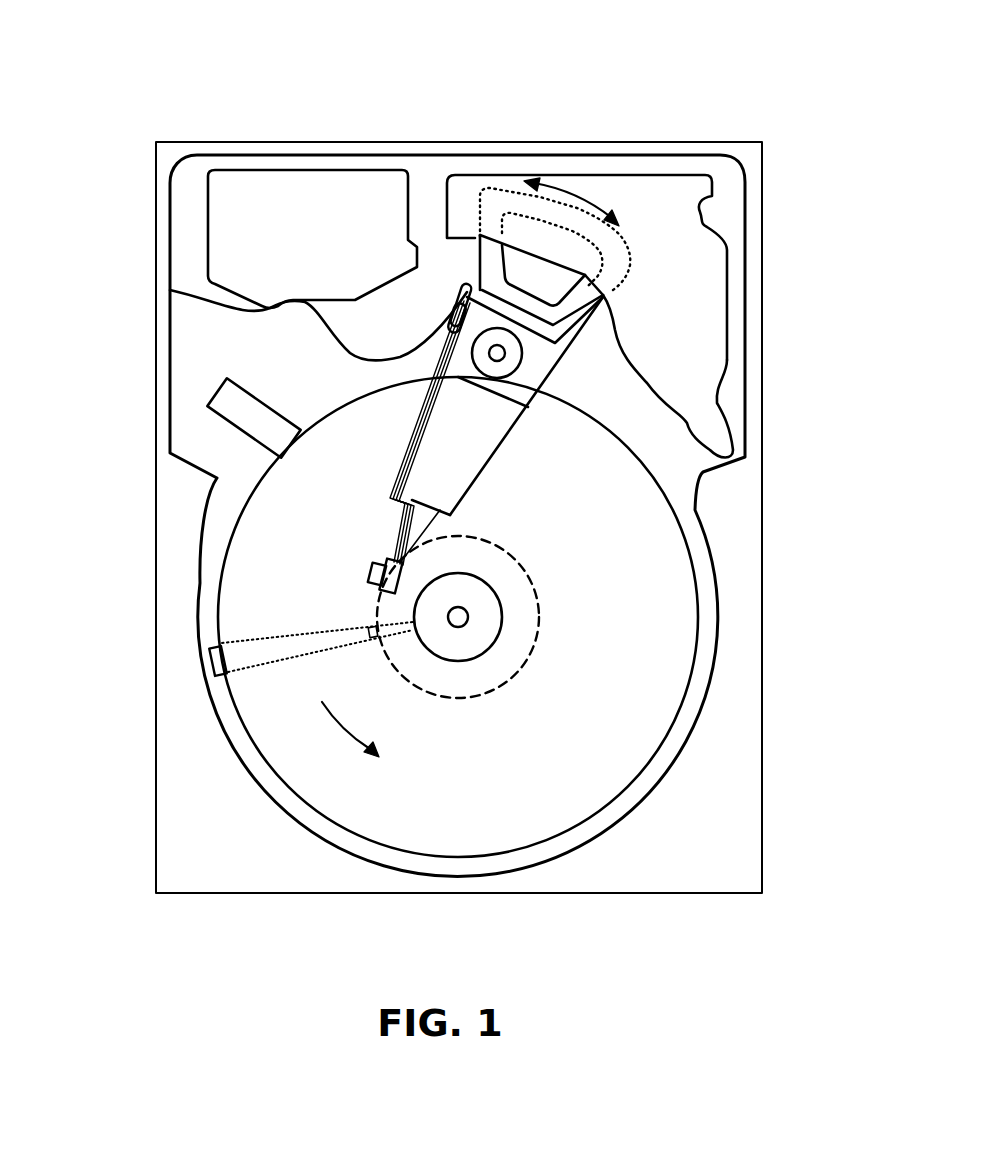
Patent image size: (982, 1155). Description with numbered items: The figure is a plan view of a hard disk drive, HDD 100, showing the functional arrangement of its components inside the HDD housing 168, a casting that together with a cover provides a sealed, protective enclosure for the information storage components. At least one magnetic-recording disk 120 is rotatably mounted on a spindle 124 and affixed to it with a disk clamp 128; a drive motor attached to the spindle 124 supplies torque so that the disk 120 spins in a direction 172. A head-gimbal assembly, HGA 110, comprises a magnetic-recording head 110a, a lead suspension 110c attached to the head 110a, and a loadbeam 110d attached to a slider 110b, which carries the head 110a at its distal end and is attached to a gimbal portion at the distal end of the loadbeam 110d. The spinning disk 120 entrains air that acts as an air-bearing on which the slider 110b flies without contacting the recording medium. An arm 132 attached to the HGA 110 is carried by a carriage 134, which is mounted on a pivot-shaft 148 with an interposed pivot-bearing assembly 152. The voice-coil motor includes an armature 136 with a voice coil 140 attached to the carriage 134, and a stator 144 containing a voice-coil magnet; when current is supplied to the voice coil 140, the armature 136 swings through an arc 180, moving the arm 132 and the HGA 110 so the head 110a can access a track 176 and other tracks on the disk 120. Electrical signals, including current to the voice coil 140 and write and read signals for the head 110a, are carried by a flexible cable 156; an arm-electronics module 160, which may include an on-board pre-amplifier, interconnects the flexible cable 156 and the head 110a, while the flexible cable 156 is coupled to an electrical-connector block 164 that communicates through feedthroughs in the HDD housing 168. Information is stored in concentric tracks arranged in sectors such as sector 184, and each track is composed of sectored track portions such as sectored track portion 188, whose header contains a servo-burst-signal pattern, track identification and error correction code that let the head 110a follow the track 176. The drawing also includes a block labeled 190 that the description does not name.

The HDD 100 is at (130, 81).
The HGA 110 is at (249, 446).
The magnetic-recording head 110a is at (387, 565).
The slider 110b is at (393, 548).
The lead suspension 110c is at (398, 520).
The loadbeam 110d is at (395, 497).
The magnetic-recording disk 120 is at (632, 570).
The spindle 124 is at (462, 616).
The disk clamp 128 is at (483, 633).
The arm 132 is at (452, 462).
The carriage 134 is at (515, 383).
The armature 136 is at (482, 287).
The voice coil 140 is at (492, 253).
The stator 144 is at (695, 263).
The pivot-shaft 148 is at (500, 353).
The pivot-bearing assembly 152 is at (508, 365).
The flexible cable 156 is at (327, 332).
The arm-electronics module 160 is at (451, 320).
The electrical-connector block 164 is at (232, 237).
The HDD housing 168 is at (746, 153).
The direction 172 is at (355, 733).
The track 176 is at (530, 580).
The arc 180 is at (572, 190).
The sector 184 is at (207, 660).
The sectored track portion 188 is at (368, 627).
The component block 190 is at (222, 387).